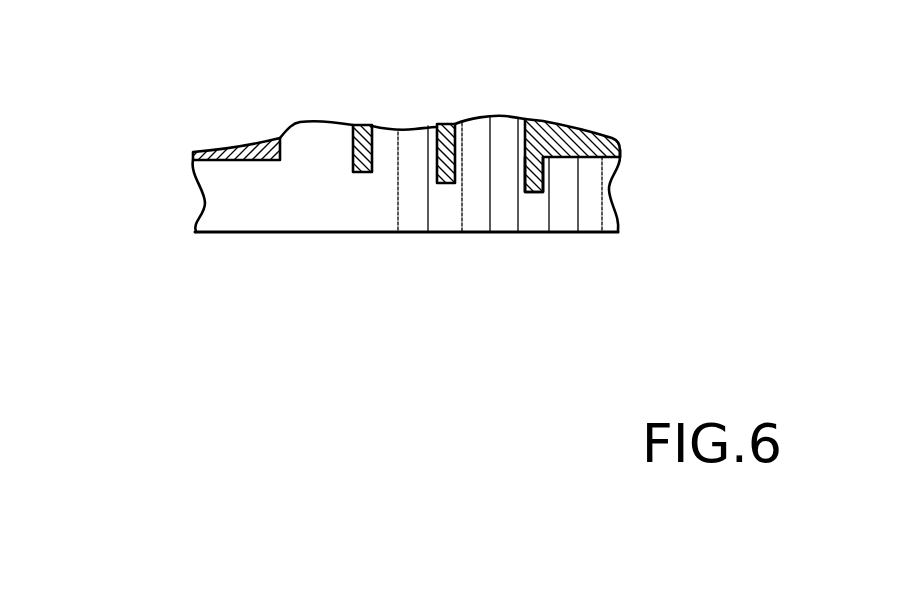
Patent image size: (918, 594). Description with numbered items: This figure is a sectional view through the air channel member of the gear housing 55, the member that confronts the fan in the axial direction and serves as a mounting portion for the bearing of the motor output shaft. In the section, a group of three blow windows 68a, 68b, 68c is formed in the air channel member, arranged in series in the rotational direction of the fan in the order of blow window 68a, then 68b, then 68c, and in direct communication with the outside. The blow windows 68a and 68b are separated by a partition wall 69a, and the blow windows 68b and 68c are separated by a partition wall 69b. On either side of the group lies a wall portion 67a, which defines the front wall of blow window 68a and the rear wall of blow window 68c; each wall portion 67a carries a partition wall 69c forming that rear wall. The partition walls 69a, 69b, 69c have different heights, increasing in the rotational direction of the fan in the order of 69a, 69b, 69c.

The gear housing 55 is at (235, 213).
The wall portion 67a is at (236, 163).
The blow window 68a is at (318, 147).
The blow window 68b is at (408, 155).
The blow window 68c is at (502, 140).
The partition wall 69a is at (363, 173).
The partition wall 69b is at (448, 190).
The partition wall 69c is at (540, 197).